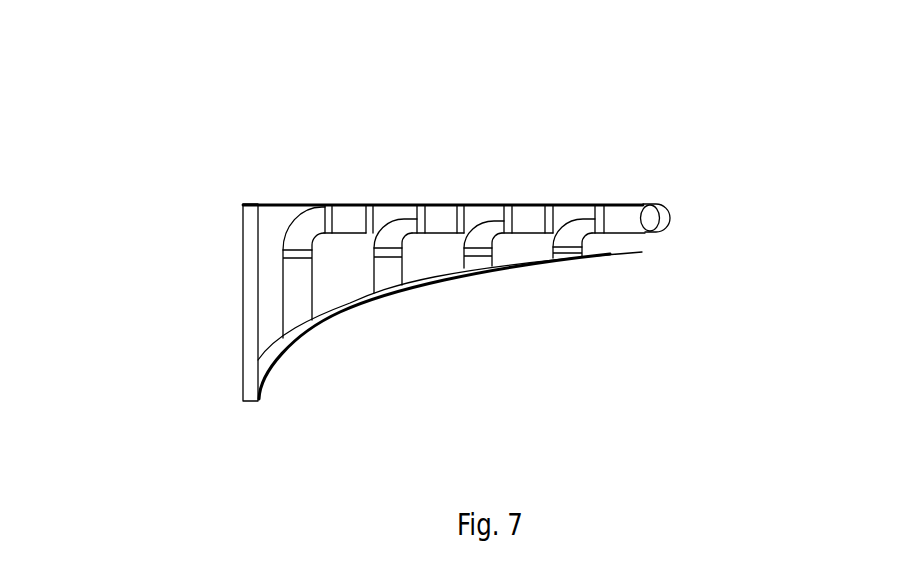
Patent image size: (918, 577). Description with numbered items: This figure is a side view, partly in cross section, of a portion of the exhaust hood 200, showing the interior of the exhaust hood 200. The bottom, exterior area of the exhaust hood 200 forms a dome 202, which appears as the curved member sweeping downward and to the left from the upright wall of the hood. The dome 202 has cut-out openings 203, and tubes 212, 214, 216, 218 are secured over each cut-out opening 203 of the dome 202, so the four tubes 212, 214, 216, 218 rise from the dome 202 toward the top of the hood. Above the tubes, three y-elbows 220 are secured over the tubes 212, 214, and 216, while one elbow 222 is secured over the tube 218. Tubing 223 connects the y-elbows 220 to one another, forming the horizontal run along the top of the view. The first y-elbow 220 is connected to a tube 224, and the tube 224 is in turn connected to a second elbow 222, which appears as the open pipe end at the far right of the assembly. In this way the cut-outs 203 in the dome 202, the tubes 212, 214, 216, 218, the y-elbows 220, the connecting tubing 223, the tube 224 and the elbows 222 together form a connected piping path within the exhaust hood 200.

The exhaust hood 200 is at (242, 333).
The dome 202 is at (428, 283).
The cut-out opening 203 is at (562, 260).
The tube 212 is at (570, 258).
The tube 214 is at (477, 257).
The tube 216 is at (388, 278).
The tube 218 is at (297, 305).
The y-elbow 220 is at (390, 222).
The elbow 222 is at (297, 222).
The tubing 223 is at (347, 204).
The tube 224 is at (625, 233).